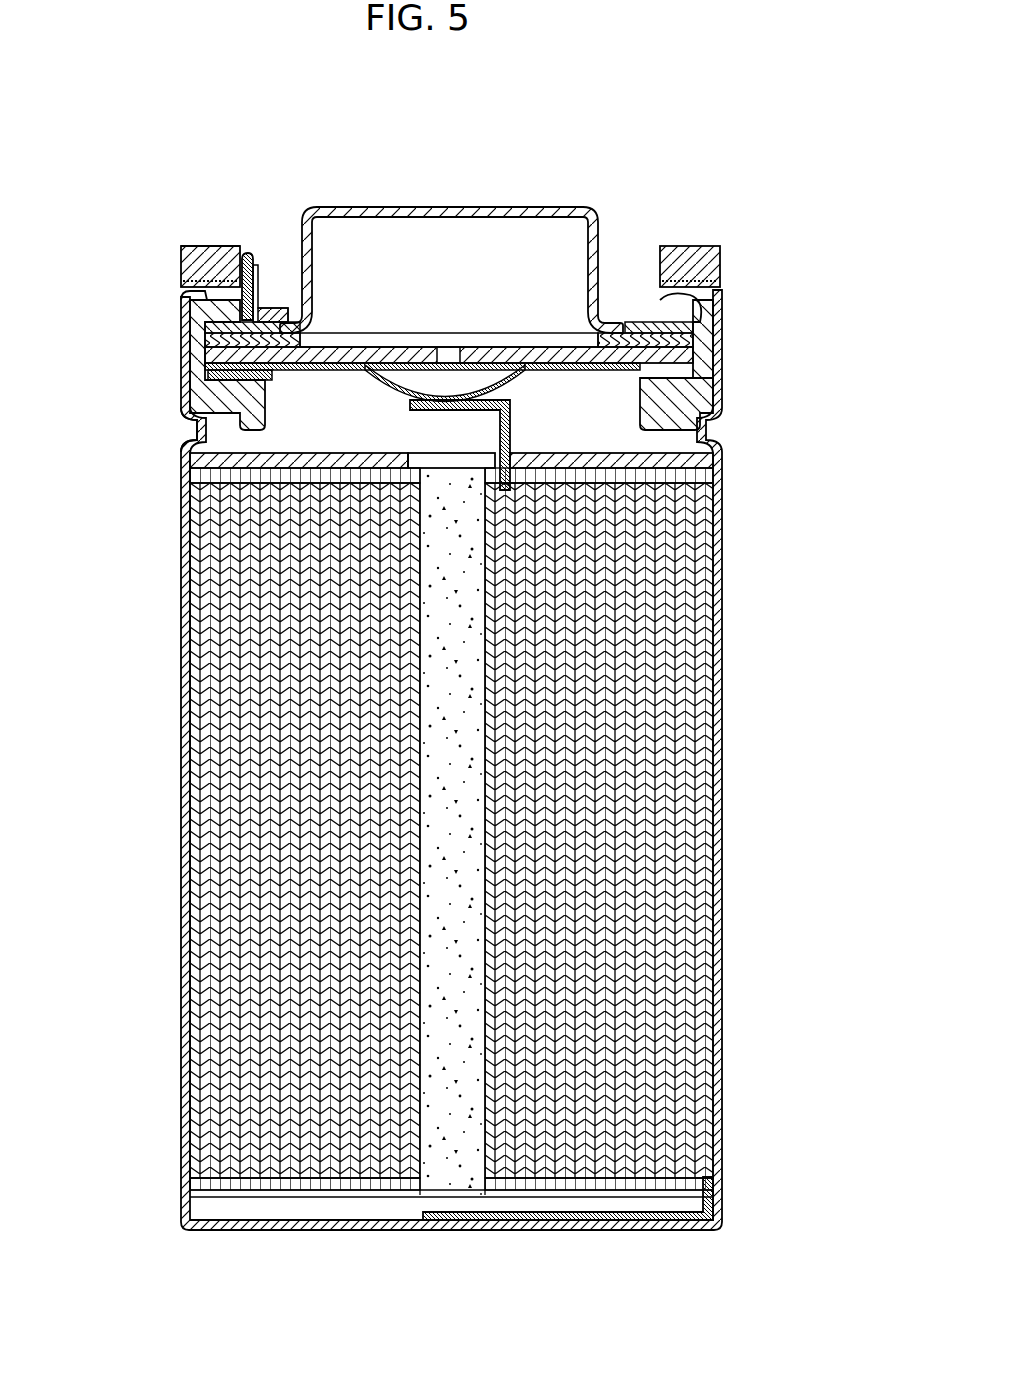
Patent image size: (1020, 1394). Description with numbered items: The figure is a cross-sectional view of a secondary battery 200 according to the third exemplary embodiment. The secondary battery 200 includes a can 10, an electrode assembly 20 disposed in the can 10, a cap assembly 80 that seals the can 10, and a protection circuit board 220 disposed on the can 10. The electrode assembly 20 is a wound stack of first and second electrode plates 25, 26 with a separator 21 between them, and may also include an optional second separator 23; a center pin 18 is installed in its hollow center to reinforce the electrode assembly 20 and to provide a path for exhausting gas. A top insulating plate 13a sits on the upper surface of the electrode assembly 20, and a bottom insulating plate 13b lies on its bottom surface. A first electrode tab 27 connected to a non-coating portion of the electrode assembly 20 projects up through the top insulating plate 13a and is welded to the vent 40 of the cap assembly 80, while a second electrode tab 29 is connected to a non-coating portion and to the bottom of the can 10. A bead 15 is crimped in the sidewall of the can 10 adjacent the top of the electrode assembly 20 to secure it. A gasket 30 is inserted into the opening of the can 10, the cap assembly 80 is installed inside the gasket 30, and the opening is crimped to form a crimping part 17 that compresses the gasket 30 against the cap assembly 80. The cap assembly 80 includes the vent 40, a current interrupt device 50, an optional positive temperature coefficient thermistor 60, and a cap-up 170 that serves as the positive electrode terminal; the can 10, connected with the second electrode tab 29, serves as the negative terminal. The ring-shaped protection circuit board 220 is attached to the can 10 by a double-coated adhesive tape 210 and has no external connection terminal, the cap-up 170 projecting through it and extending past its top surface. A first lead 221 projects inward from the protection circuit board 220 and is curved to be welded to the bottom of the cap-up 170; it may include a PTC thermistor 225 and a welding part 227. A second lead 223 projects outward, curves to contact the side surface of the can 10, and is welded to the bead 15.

The secondary battery 200 is at (680, 90).
The can 10 is at (187, 567).
The top insulating plate 13a is at (198, 436).
The bottom insulating plate 13b is at (325, 1197).
The bead 15 is at (182, 423).
The crimping part 17 is at (196, 246).
The center pin 18 is at (427, 633).
The electrode assembly 20 is at (464, 811).
The separator 21 is at (697, 582).
The second separator 23 is at (673, 652).
The first electrode plate 25 is at (680, 615).
The second electrode plate 26 is at (700, 535).
The first electrode tab 27 is at (510, 442).
The second electrode tab 29 is at (640, 1232).
The gasket 30 is at (700, 303).
The vent 40 is at (334, 350).
The current interrupt device 50 is at (500, 350).
The positive temperature coefficient thermistor 60 is at (613, 323).
The cap assembly 80 is at (449, 253).
The cap-up 170 is at (415, 212).
The double-coated adhesive tape 210 is at (720, 283).
The protection circuit board 220 is at (720, 256).
The first lead 221 is at (243, 252).
The second lead 223 is at (703, 383).
The PTC thermistor 225 is at (258, 300).
The welding part 227 is at (283, 307).